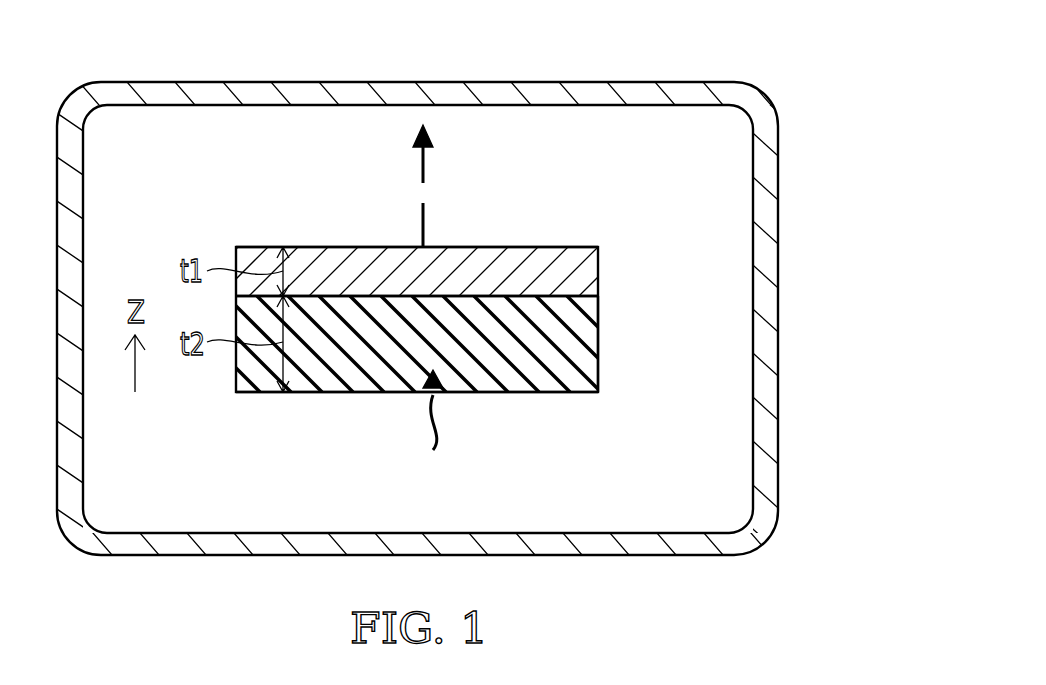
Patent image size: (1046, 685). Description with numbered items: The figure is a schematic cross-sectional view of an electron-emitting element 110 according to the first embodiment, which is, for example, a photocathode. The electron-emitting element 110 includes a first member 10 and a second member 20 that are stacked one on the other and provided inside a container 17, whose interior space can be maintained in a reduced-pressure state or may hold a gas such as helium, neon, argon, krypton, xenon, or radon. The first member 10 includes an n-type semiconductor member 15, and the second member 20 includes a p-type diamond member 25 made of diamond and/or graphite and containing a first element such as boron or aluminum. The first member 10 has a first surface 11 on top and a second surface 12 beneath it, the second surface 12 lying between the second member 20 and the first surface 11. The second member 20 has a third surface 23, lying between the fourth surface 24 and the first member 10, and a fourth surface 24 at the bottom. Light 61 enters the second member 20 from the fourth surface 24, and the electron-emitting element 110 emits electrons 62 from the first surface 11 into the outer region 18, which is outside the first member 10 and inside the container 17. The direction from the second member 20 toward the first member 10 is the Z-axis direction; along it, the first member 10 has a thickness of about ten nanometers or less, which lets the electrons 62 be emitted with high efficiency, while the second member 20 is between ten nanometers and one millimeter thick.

The electron-emitting element 110 is at (439, 294).
The container 17 is at (763, 380).
The outer region 18 is at (557, 215).
The first member 10 is at (413, 316).
The first surface 11 is at (372, 247).
The second surface 12 is at (337, 296).
The n-type semiconductor member 15 is at (577, 260).
The second member 20 is at (567, 332).
The third surface 23 is at (372, 297).
The fourth surface 24 is at (378, 392).
The p-type diamond member 25 is at (557, 367).
The light 61 is at (437, 436).
The electrons 62 is at (427, 162).